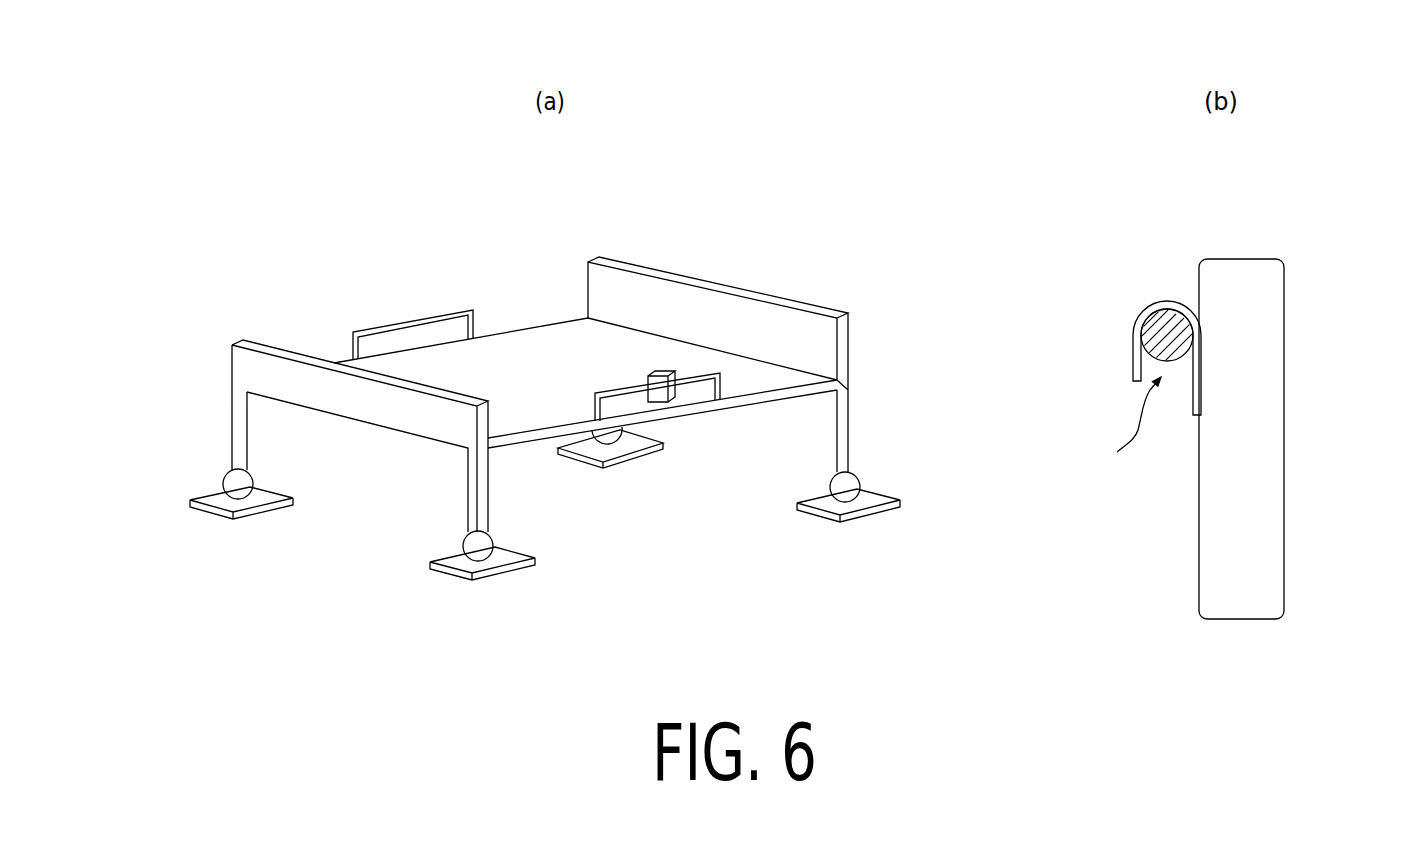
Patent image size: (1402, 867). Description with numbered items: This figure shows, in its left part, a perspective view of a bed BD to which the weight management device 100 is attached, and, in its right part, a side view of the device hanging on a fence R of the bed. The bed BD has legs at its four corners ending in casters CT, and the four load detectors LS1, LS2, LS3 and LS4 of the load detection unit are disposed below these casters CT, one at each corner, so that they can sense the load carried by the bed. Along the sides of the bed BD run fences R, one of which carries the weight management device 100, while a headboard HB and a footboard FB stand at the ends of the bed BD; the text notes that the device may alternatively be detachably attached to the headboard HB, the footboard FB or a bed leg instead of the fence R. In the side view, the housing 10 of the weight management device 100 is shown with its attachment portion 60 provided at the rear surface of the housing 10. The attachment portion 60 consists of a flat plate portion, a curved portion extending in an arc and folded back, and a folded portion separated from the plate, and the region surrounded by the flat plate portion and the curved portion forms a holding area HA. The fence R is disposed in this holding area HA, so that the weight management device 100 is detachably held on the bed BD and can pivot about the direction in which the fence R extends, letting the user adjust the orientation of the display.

The weight management device 100 is at (659, 372).
The fence R is at (425, 322).
The headboard HB is at (810, 312).
The bed BD is at (847, 390).
The footboard FB is at (408, 416).
The caster CT is at (222, 481).
The load detector LS1 is at (505, 570).
The load detector LS2 is at (270, 512).
The load detector LS3 is at (650, 452).
The load detector LS4 is at (862, 513).
The attachment portion 60 is at (1153, 300).
The housing 10 is at (1255, 328).
The holding area HA is at (1115, 427).